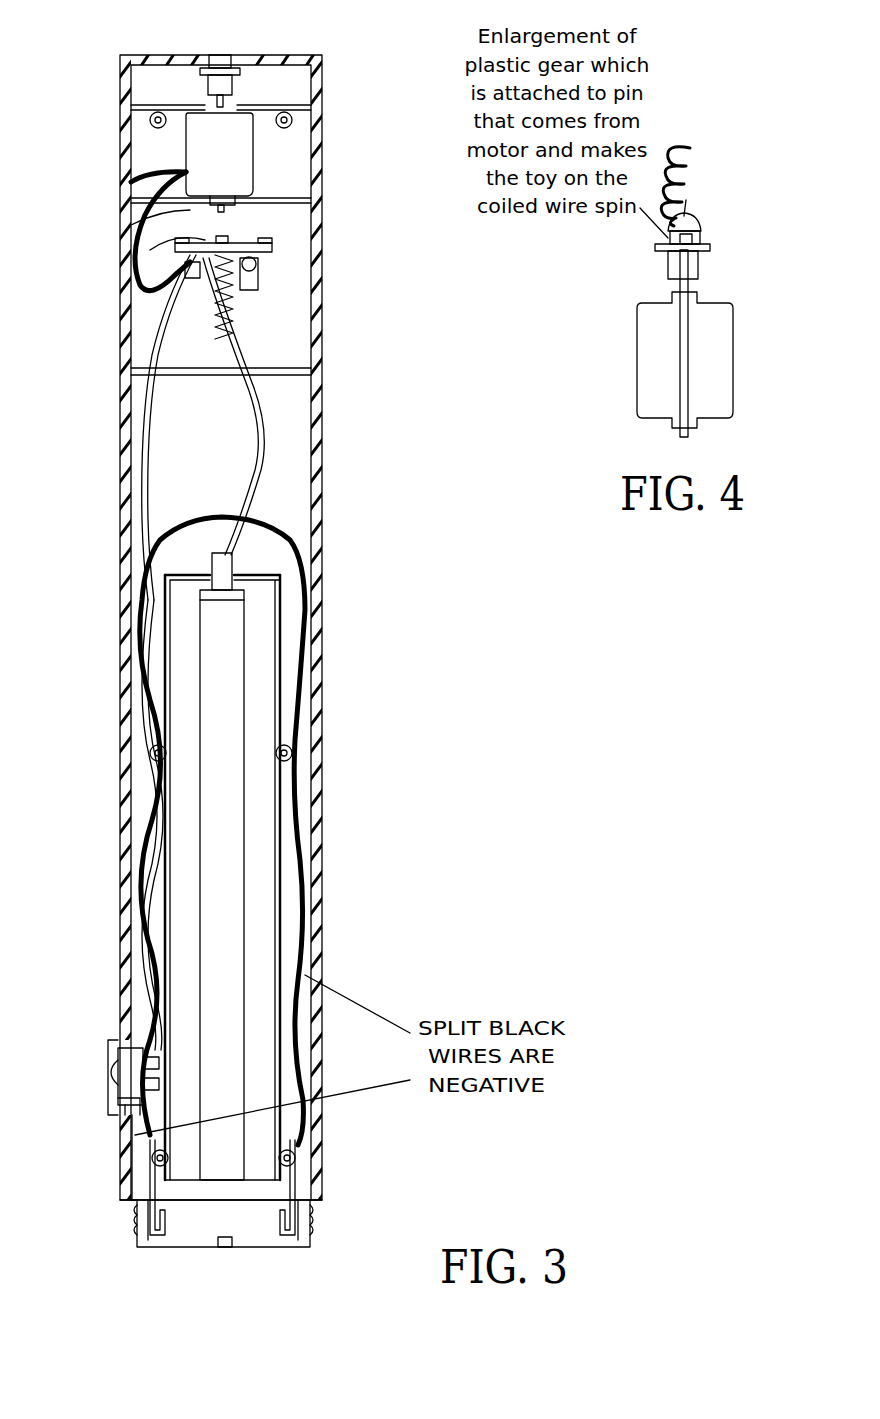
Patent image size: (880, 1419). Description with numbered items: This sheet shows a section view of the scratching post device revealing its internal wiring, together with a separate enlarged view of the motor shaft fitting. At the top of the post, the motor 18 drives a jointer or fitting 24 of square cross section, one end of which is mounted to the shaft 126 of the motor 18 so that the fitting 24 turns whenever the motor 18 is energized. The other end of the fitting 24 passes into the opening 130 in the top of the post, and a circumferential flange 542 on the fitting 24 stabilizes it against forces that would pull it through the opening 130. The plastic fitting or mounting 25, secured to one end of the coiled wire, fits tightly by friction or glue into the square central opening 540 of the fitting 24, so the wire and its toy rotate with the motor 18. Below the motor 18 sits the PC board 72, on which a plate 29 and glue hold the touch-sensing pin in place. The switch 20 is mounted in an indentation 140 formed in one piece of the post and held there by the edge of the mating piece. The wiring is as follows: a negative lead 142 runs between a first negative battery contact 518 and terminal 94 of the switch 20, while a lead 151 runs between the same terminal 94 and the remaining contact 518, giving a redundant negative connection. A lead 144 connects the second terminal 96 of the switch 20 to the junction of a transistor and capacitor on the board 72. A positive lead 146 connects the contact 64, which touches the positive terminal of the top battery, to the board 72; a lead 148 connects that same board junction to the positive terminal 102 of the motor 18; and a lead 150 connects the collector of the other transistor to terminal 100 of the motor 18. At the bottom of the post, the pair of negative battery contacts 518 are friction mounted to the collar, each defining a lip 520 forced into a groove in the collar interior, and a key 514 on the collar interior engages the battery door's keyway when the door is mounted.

In FIG. 4, the motor 18 is at (728, 365).
In FIG. 3, the switch 20 is at (128, 1060).
In FIG. 3, the jointer or fitting 24 is at (234, 85).
In FIG. 4, the jointer or fitting 24 is at (704, 270).
In FIG. 4, the plastic fitting or mounting 25 is at (692, 222).
In FIG. 3, the plate 29 is at (234, 243).
In FIG. 3, the contact 64 is at (258, 552).
In FIG. 3, the PC board 72 is at (266, 284).
In FIG. 3, the terminal of switch 94 is at (151, 1083).
In FIG. 3, the second terminal of switch 96 is at (151, 1062).
In FIG. 3, the terminal of motor 100 is at (248, 190).
In FIG. 3, the positive terminal of motor 102 is at (183, 170).
In FIG. 3, the shaft of motor 126 is at (216, 100).
In FIG. 3, the opening 130 is at (220, 55).
In FIG. 3, the indentation 140 is at (118, 1098).
In FIG. 3, the negative lead 142 is at (152, 1125).
In FIG. 3, the lead 144 is at (140, 487).
In FIG. 3, the positive lead 146 is at (262, 420).
In FIG. 3, the lead 148 is at (168, 217).
In FIG. 3, the lead 150 is at (170, 245).
In FIG. 3, the lead 151 is at (298, 778).
In FIG. 3, the key 514 is at (228, 1247).
In FIG. 3, the negative battery contact 518 is at (175, 1225).
In FIG. 3, the lip 520 is at (148, 1240).
In FIG. 4, the square central opening 540 is at (692, 240).
In FIG. 3, the circumferential flange 542 is at (238, 72).
In FIG. 4, the circumferential flange 542 is at (710, 248).